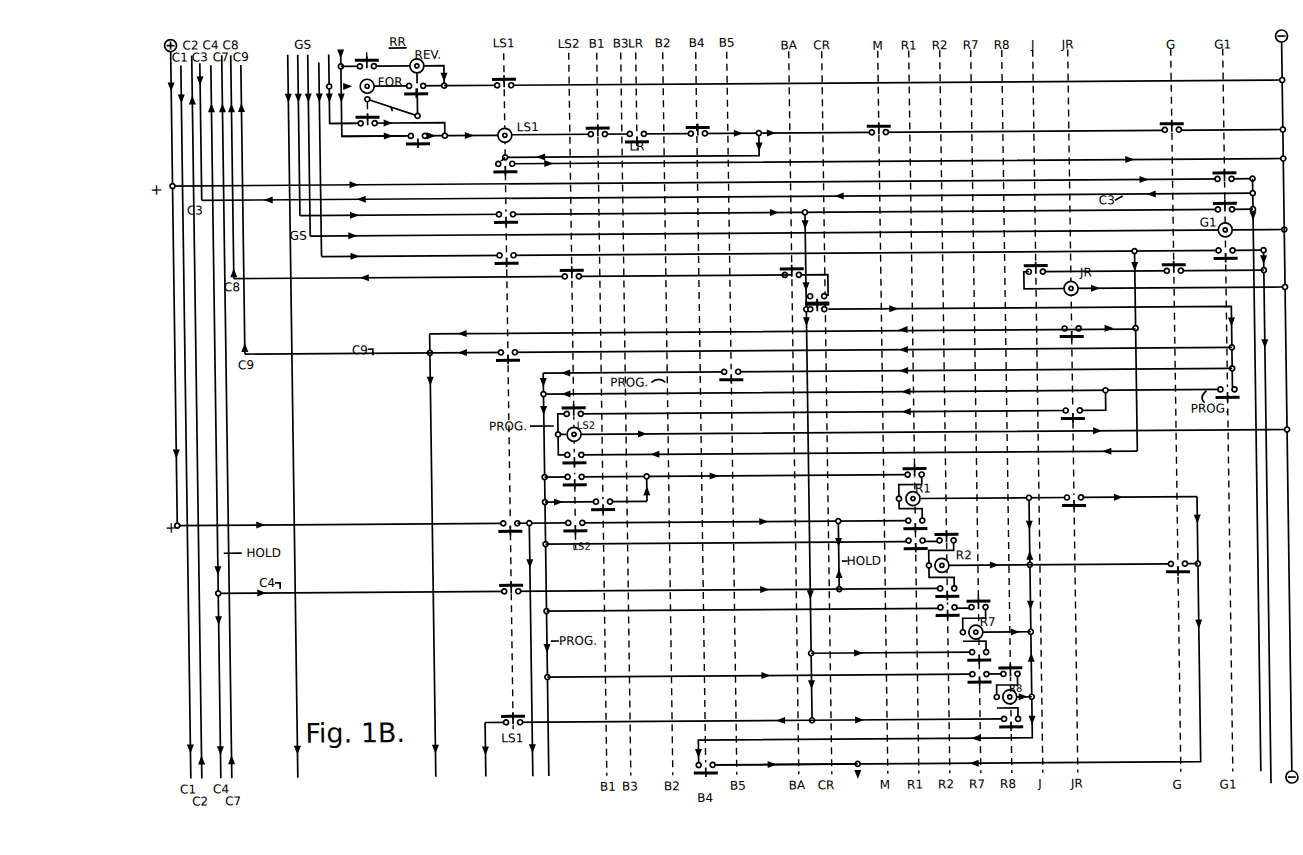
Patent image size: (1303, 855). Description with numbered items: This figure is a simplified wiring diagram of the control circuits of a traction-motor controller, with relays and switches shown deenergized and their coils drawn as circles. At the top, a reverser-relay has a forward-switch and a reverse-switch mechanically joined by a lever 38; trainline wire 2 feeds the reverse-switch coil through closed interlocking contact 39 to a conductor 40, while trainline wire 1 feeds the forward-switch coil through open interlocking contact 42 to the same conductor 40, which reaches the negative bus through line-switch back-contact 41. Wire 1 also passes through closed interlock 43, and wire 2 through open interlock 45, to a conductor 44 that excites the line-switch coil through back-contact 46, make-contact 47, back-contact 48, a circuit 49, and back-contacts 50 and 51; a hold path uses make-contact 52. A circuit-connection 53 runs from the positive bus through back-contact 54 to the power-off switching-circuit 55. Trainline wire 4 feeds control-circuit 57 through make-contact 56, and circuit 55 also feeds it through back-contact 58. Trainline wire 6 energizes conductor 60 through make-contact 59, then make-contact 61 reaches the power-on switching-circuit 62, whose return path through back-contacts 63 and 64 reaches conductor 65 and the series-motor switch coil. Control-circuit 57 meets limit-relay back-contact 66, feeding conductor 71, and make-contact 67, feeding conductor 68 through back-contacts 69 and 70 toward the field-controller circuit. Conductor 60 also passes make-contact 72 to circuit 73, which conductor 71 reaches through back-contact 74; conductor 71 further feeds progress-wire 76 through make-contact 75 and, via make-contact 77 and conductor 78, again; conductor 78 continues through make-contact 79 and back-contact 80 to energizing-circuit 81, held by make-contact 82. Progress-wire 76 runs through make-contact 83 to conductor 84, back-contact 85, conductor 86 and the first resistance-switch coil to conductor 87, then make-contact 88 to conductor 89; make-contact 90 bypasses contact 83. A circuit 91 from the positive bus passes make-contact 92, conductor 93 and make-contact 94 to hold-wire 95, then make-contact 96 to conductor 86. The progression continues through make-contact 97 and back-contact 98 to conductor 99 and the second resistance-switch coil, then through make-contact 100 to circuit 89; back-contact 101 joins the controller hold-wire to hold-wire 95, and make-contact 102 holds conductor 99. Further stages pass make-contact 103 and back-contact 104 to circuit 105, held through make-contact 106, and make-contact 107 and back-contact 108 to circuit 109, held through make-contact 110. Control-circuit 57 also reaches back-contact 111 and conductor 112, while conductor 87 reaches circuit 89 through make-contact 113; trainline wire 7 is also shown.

The trainline wire 1 is at (337, 83).
The trainline wire 2 is at (368, 92).
The trainline wire 4 is at (297, 140).
The trainline wire 6 is at (316, 156).
The conductor 7 is at (294, 420).
The lever 38 is at (392, 102).
The interlocking contact 39 is at (375, 56).
The conductor 40 is at (443, 82).
The back-contact of line-switch LS1 41 is at (864, 74).
The interlocking contact 42 is at (395, 95).
The interlock 43 is at (387, 126).
The conductor 44 is at (468, 146).
The interlock 45 is at (393, 146).
The back-contact of brake-switch B1 46 is at (899, 122).
The make-contact of line-relay LR 47 is at (642, 128).
The back-contact of brake-switch B4 48 is at (703, 123).
The circuit 49 is at (643, 141).
The back-contact of parallel-connection switch M 50 is at (885, 124).
The back-contact of parallel-connection switch G 51 is at (1176, 120).
The make-contact of line-switch LS1 52 is at (881, 162).
The circuit-connection 53 is at (417, 185).
The back-contact of ground-switch G1 54 is at (1227, 169).
The power-off switching-circuit 55 is at (1247, 480).
The make-contact of line-switch LS1 56 is at (762, 209).
The control-circuit 57 is at (801, 468).
The back-contact of ground-switch G1 58 is at (1224, 200).
The make-contact of line-switch LS1 59 is at (773, 250).
The conductor 60 is at (1137, 345).
The make-contact of ground-switch G1 61 is at (1228, 260).
The power-on switching-circuit 62 is at (1275, 521).
The back-contact of parallel-connection switch G 63 is at (1153, 262).
The back-contact of transition-switch J 64 is at (1042, 263).
The conductor 65 is at (1146, 288).
The back-contact of limit-relay CR 66 is at (825, 315).
The make-contact of limit-relay CR 67 is at (830, 297).
The conductor 68 is at (825, 282).
The back-contact of brake-actuator BA 69 is at (784, 265).
The back-contact of second line-switch LS2 70 is at (513, 270).
The conductor 71 is at (875, 309).
The make-contact of series-motoring switch JR 72 is at (1086, 324).
The circuit 73 is at (875, 331).
The back-contact of line-switch LS1 74 is at (738, 347).
The make-contact of brake-switch B5 75 is at (887, 367).
The progress-wire 76 is at (875, 393).
The make-contact of ground-switch G1 77 is at (1221, 384).
The conductor 78 is at (1105, 393).
The make-contact of series-motoring switch JR 79 is at (832, 407).
The back-contact of second line-switch LS2 80 is at (575, 424).
The energizing-circuit 81 is at (917, 436).
The make-contact of LS2 82 is at (849, 449).
The make-contact of LS2 83 is at (725, 472).
The conductor 84 is at (680, 479).
The back-contact of resistance-switch R1 85 is at (906, 476).
The conductor 86 is at (971, 504).
The conductor 87 is at (866, 621).
The make-contact of series-motoring switch JR 88 is at (1129, 493).
The conductor 89 is at (968, 637).
The make-contact of braking-switch B1 90 is at (596, 497).
The circuit 91 is at (365, 518).
The make-contact of line-switch LS1 92 is at (500, 519).
The conductor 93 is at (544, 651).
The make-contact of line-switch LS2 94 is at (729, 518).
The hold-wire 95 is at (839, 555).
The make-contact of resistance-switch R1 96 is at (924, 522).
The make-contact of resistance-switch R1 97 is at (743, 550).
The back-contact of resistance-switch R2 98 is at (949, 543).
The conductor 99 is at (1038, 571).
The make-contact of parallel-connection switch G 100 is at (1170, 560).
The back-contact of line-switch LS1 101 is at (577, 582).
The make-contact of resistance-switch R2 102 is at (961, 589).
The make-contact of R2 103 is at (758, 617).
The back-contact of R7 104 is at (986, 610).
The circuit 105 is at (979, 631).
The make-contact of R7 106 is at (916, 651).
The make-contact of R7 107 is at (775, 682).
The back-contact of R8 108 is at (1018, 673).
The circuit 109 is at (999, 697).
The make-contact of R8 110 is at (917, 722).
The back-contact of LS1 111 is at (648, 712).
The conductor 112 is at (477, 756).
The make-contact of brake-switch B4 113 is at (775, 761).